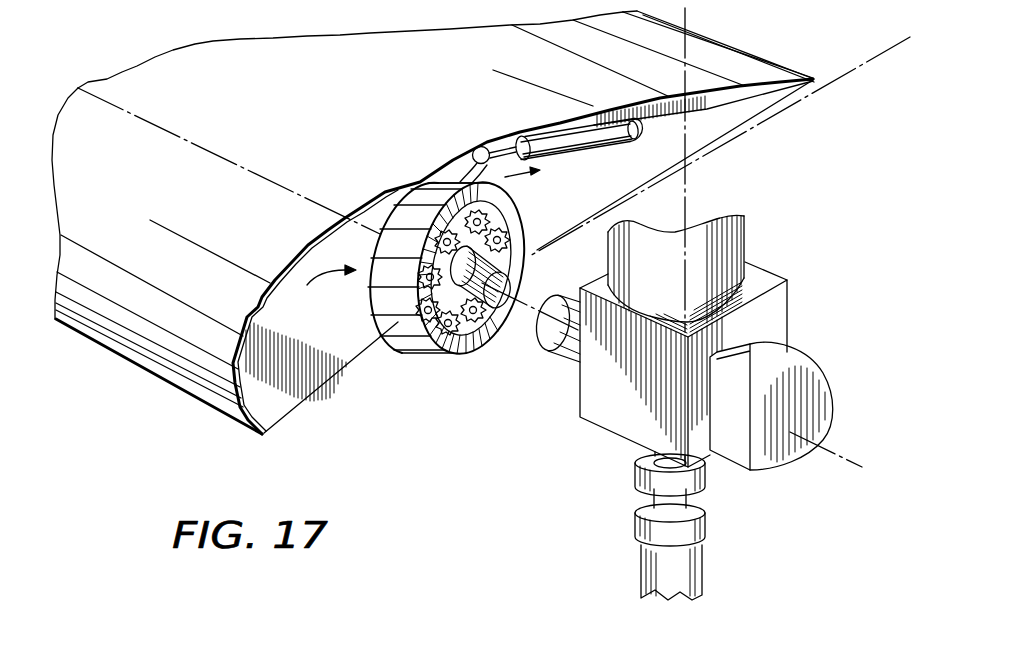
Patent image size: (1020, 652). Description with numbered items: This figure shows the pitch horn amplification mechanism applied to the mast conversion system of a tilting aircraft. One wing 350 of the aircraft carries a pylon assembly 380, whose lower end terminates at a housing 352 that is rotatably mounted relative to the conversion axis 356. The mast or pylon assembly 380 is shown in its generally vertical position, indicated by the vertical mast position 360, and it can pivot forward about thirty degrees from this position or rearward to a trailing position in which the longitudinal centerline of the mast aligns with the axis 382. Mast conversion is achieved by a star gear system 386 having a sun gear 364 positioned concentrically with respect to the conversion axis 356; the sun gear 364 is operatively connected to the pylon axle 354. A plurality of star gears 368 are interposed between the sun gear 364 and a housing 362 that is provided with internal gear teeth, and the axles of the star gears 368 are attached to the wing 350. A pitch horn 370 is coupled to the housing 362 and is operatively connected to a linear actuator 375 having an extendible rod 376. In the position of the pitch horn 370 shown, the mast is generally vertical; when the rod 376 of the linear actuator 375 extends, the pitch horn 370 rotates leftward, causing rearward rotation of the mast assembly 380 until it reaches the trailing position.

The wing 350 is at (199, 217).
The housing 352 is at (586, 397).
The pylon axle 354 is at (550, 350).
The conversion axis 356 is at (302, 193).
The vertical mast position 360 is at (684, 24).
The housing 362 is at (441, 352).
The sun gear 364 is at (512, 256).
The star gears 368 is at (503, 226).
The pitch horn 370 is at (466, 178).
The linear actuator 375 is at (589, 142).
The extendible rod 376 is at (500, 146).
The pylon assembly 380 is at (784, 254).
The axis 382 is at (760, 127).
The star gear system 386 is at (320, 289).